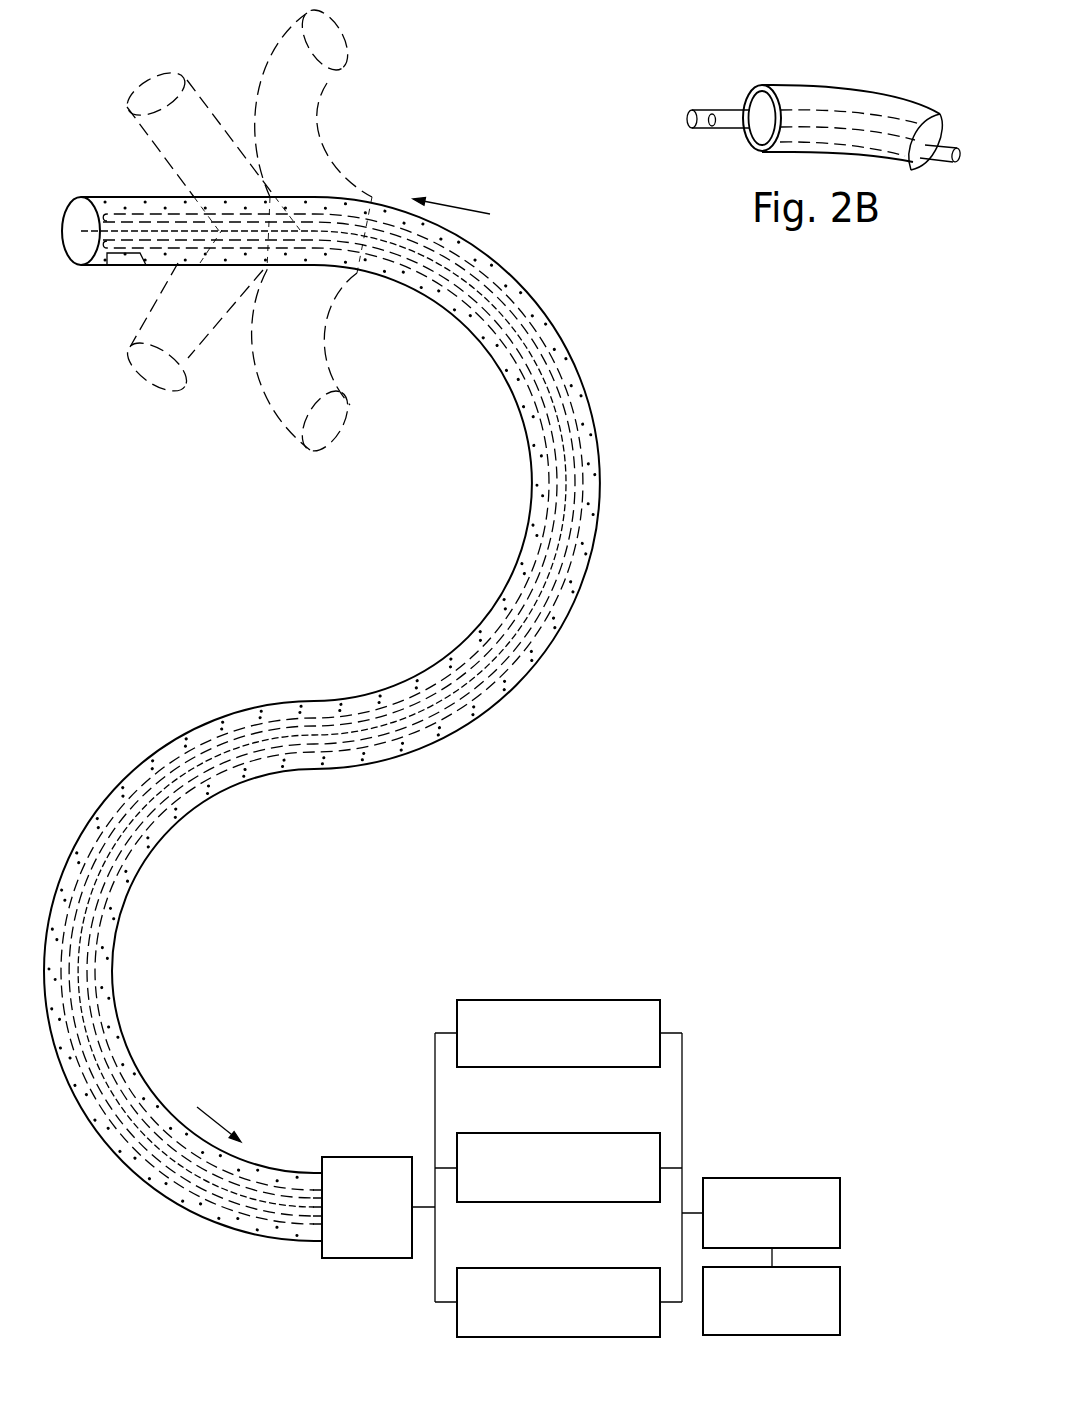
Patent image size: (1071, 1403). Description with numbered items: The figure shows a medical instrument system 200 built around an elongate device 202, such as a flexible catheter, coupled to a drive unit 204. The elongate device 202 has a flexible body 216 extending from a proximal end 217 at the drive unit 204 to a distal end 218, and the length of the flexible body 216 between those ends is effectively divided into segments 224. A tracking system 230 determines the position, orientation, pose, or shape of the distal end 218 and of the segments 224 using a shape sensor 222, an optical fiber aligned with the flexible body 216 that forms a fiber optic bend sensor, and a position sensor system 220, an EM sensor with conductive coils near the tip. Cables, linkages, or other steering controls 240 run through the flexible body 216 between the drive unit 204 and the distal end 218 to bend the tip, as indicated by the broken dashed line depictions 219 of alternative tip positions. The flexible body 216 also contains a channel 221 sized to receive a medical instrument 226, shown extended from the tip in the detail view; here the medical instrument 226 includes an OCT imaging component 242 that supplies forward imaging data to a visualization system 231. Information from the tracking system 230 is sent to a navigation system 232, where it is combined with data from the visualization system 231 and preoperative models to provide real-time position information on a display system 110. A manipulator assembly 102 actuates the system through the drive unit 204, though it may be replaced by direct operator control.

In FIG. 2A, the medical instrument system 200 is at (494, 134).
In FIG. 2A, the elongate device 202 is at (600, 404).
In FIG. 2A, the flexible body 216 is at (243, 710).
In FIG. 2B, the flexible body 216 is at (880, 92).
In FIG. 2A, the distal end 218 is at (89, 182).
In FIG. 2B, the distal end 218 is at (768, 72).
In FIG. 2A, the proximal end 217 is at (289, 1260).
In FIG. 2A, the broken dashed line depictions 219 is at (165, 72).
In FIG. 2A, the position sensor system 220 is at (125, 268).
In FIG. 2B, the channel 221 is at (750, 142).
In FIG. 2A, the shape sensor 222 is at (588, 476).
In FIG. 2A, the segments 224 is at (555, 638).
In FIG. 2A, the medical instrument 226 is at (543, 515).
In FIG. 2B, the medical instrument 226 is at (730, 108).
In FIG. 2A, the steering controls 240 is at (548, 575).
In FIG. 2B, the OCT imaging component 242 is at (708, 126).
In FIG. 2A, the drive unit 204 is at (365, 1260).
In FIG. 2A, the manipulator assembly 102 is at (558, 1000).
In FIG. 2A, the visualization system 231 is at (558, 1133).
In FIG. 2A, the tracking system 230 is at (558, 1268).
In FIG. 2A, the navigation system 232 is at (840, 1228).
In FIG. 2A, the display system 110 is at (840, 1303).